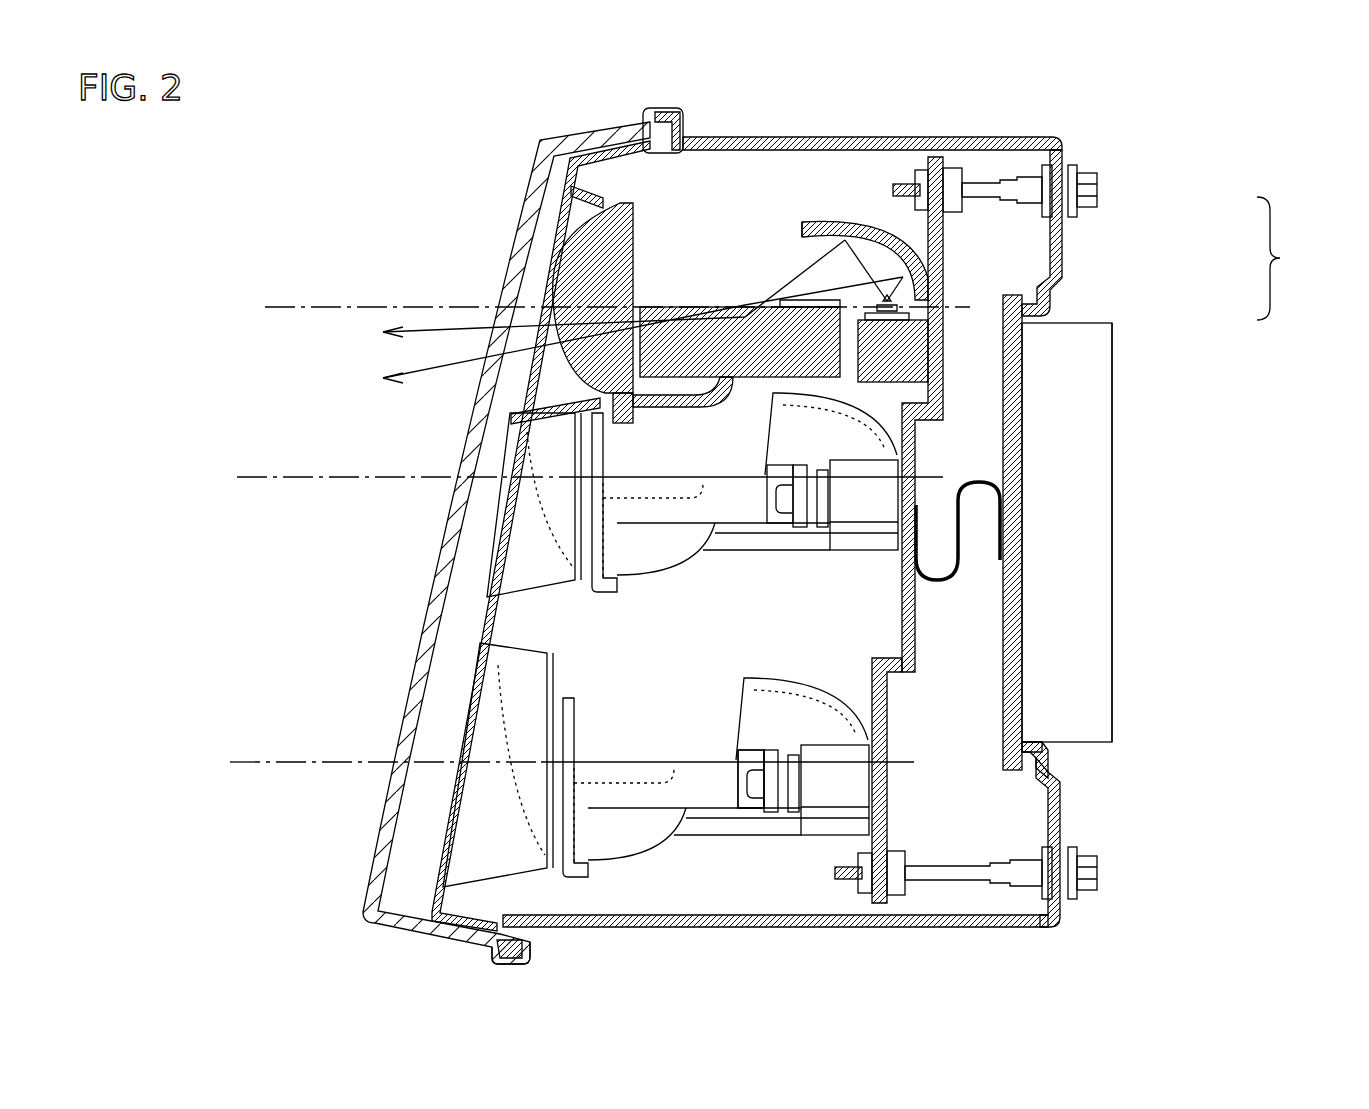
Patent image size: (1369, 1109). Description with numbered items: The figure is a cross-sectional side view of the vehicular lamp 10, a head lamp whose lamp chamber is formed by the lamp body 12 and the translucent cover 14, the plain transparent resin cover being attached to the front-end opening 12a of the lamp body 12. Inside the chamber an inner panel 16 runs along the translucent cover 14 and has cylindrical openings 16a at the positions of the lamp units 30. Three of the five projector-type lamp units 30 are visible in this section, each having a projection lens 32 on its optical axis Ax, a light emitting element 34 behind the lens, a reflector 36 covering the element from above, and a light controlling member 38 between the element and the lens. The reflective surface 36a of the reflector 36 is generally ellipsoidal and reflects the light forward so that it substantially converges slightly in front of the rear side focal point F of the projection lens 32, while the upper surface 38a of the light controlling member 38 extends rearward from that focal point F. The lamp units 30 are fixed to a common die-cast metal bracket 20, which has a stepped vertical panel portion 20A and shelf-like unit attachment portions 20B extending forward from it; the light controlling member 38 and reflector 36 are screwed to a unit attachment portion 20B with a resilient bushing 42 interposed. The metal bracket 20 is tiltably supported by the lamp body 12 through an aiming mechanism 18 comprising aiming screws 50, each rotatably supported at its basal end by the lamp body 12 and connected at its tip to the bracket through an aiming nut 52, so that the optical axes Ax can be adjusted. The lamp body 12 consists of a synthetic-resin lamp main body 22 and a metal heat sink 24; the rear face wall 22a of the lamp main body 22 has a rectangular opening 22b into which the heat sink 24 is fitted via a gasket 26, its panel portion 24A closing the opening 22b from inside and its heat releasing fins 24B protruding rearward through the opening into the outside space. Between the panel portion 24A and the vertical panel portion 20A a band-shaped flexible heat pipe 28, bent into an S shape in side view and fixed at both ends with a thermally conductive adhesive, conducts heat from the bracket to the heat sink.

The vehicular lamp 10 is at (322, 163).
The lamp body 12 is at (908, 562).
The front-end opening 12a is at (496, 920).
The translucent cover 14 is at (407, 625).
The inner panel 16 is at (477, 568).
The openings 16a is at (540, 398).
The aiming mechanism 18 is at (897, 167).
The metal bracket 20 is at (948, 398).
The vertical panel portion 20A is at (915, 637).
The unit attachment portions 20B is at (925, 420).
The lamp main body 22 is at (1072, 250).
The rear face wall 22a is at (1068, 803).
The opening 22b is at (1050, 750).
The heat sink 24 is at (1117, 330).
The panel portion 24A is at (1018, 593).
The heat releasing fins 24B is at (1083, 507).
The gasket 26 is at (1037, 770).
The flexible heat pipe 28 is at (960, 563).
The lamp units 30 is at (565, 232).
The projection lens 32 is at (563, 283).
The light emitting element 34 is at (883, 303).
The reflector 36 is at (867, 243).
The reflective surface 36a is at (805, 247).
The light controlling member 38 is at (755, 378).
The upper surface 38a is at (775, 300).
The resilient bushing 42 is at (795, 808).
The aiming screws 50 is at (997, 190).
The aiming nut 52 is at (957, 207).
The rear side focal point F is at (745, 303).
The optical axis Ax is at (323, 307).